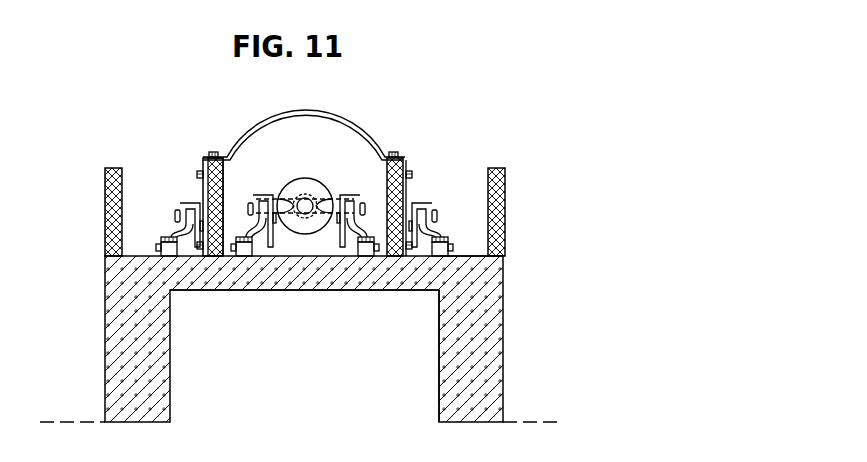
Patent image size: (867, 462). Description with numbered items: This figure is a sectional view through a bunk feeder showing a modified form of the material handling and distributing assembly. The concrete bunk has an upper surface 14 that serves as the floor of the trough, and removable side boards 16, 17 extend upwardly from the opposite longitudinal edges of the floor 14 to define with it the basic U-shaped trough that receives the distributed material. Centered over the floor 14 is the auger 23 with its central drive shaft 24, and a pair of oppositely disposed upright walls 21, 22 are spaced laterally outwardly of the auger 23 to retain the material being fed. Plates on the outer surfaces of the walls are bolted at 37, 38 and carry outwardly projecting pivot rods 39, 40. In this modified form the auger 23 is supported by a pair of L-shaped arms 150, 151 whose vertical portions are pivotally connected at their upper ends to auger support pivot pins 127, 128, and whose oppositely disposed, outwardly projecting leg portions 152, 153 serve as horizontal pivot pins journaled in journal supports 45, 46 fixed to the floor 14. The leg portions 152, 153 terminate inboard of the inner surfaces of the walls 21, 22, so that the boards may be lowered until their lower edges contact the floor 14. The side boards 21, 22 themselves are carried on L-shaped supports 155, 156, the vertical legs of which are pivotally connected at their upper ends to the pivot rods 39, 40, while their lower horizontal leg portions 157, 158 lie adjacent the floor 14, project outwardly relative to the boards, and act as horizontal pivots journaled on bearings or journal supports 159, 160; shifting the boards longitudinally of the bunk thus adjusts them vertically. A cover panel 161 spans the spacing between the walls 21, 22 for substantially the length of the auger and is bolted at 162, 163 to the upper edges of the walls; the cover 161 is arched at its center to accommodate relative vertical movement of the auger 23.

The upper surface (floor) 14 is at (482, 256).
The removable side board 16 is at (104, 193).
The removable side board 17 is at (506, 214).
The upright wall 21 is at (223, 176).
The upright wall 22 is at (387, 176).
The auger 23 is at (303, 179).
The central drive shaft 24 is at (309, 203).
The bolt 37 is at (199, 172).
The bolt 38 is at (407, 172).
The pivot rod 39 is at (177, 211).
The pivot rod 40 is at (422, 232).
The journal block 45 is at (252, 232).
The journal block 46 is at (358, 230).
The auger support pivot pin 127 is at (254, 203).
The auger support pivot pin 128 is at (359, 203).
The L-shaped arm 150 is at (256, 216).
The L-shaped arm 151 is at (355, 216).
The leg portion 152 is at (300, 339).
The leg portion 153 is at (304, 277).
The L-shaped support 155 is at (189, 232).
The L-shaped support 156 is at (424, 230).
The lower horizontal leg portion 157 is at (158, 246).
The lower horizontal leg portion 158 is at (460, 343).
The journal support 159 is at (168, 237).
The journal support 160 is at (441, 237).
The cover panel 161 is at (254, 127).
The bolt 162 is at (213, 152).
The bolt 163 is at (394, 152).